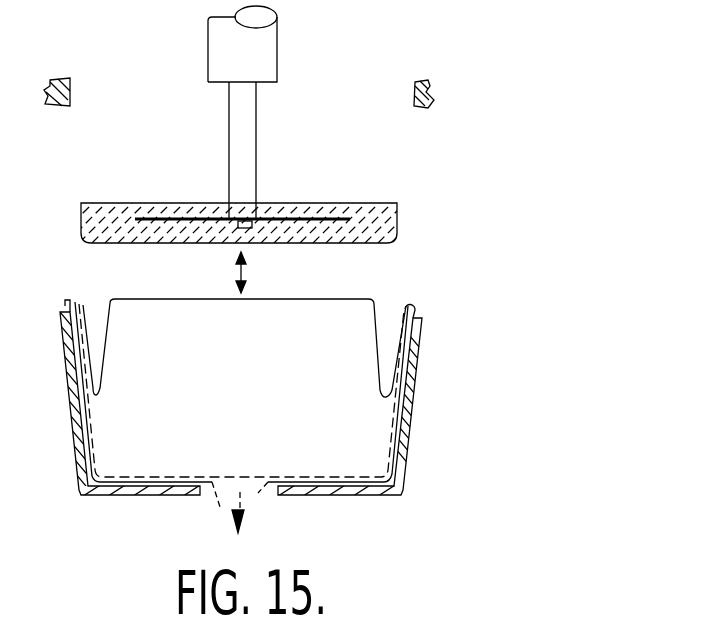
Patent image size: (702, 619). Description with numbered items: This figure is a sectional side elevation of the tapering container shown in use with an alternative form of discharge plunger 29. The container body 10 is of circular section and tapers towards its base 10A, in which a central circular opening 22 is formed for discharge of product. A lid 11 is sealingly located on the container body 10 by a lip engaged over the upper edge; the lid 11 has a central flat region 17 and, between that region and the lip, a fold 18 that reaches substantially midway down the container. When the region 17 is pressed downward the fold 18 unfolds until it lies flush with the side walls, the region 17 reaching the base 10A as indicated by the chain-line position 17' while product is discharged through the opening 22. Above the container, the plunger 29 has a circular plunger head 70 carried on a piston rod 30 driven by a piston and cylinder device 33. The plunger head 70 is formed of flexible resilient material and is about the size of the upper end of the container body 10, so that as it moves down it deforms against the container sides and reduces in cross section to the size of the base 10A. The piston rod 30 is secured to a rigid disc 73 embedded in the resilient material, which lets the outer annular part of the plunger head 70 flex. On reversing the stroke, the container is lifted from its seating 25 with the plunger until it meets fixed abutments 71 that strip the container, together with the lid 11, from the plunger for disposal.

The fixed abutments 71 is at (52, 78).
The piston and cylinder device 33 is at (183, 100).
The piston rod 30 is at (229, 140).
The discharge plunger 29 is at (235, 191).
The plunger head 70 is at (82, 216).
The rigid disc 73 is at (137, 213).
The lid 11 is at (265, 331).
The central flat region 17 is at (242, 328).
The fold 18 is at (121, 371).
The container body 10 is at (229, 422).
The seating 25 is at (76, 420).
The base 10A is at (131, 494).
The film layer 17' is at (241, 405).
The central circular opening 22 is at (260, 492).